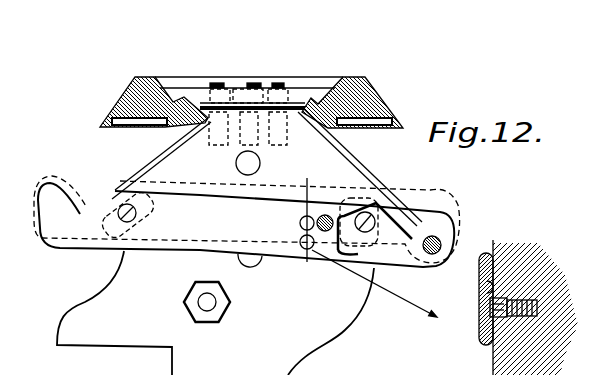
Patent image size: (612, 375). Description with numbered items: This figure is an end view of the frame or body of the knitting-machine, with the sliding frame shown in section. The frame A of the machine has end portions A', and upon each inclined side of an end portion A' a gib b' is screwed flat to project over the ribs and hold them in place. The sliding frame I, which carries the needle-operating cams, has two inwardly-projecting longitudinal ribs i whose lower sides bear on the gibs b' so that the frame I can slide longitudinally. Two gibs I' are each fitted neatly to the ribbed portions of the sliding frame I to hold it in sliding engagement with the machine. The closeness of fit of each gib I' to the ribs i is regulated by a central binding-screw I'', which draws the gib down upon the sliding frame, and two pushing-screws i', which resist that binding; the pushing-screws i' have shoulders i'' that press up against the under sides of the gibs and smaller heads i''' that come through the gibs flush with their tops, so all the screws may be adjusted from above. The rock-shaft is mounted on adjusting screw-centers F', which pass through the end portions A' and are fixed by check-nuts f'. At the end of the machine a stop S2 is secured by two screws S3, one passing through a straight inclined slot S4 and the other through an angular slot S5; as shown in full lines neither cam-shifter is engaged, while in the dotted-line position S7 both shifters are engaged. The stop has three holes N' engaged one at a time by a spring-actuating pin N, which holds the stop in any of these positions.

The sliding frame I is at (251, 102).
The gibs I' is at (249, 83).
The central binding-screw I'' is at (252, 80).
The inwardly-projecting longitudinal ribs i is at (252, 104).
The pushing-screws i' is at (288, 101).
The shoulders i'' is at (264, 91).
The smaller heads i''' is at (275, 90).
The gib b' is at (267, 167).
The stops S2 is at (489, 304).
The screws S3 is at (133, 220).
The straight inclined slot S4 is at (114, 230).
The angular slot S5 is at (362, 252).
The stop position in dotted lines S7 is at (306, 180).
The spring-actuating pin N is at (382, 290).
The holes N' is at (380, 254).
The frame A is at (321, 321).
The end portions A' is at (317, 297).
The adjusting screw-centers F' is at (214, 303).
The check-nuts f' is at (186, 302).